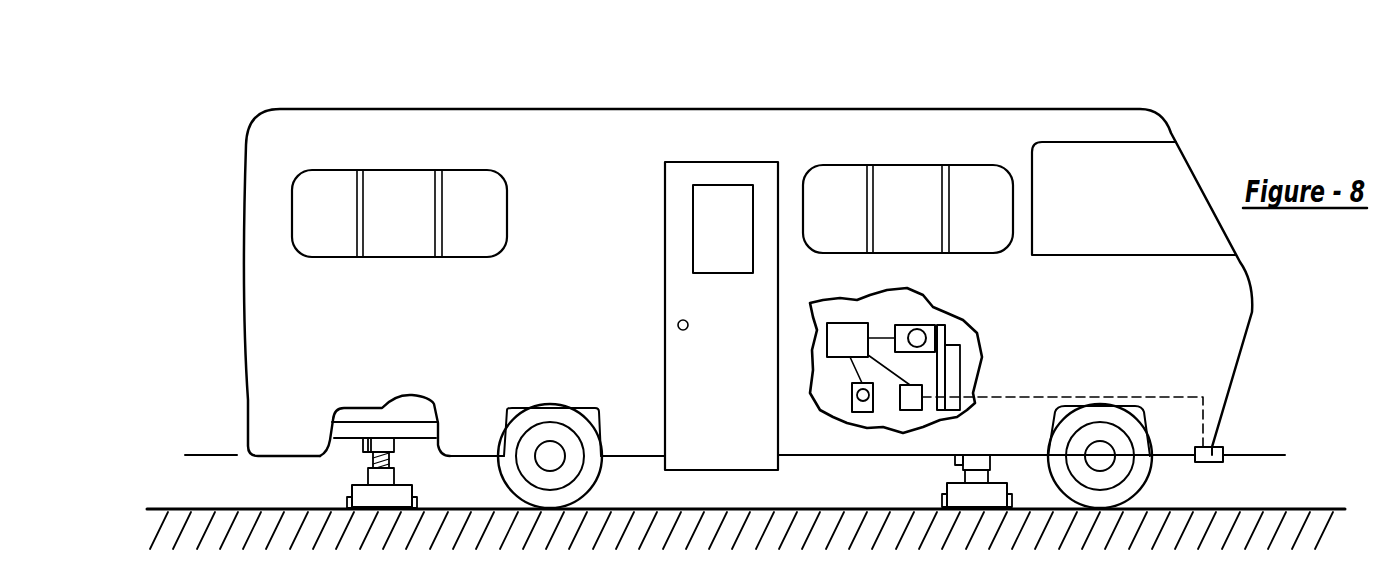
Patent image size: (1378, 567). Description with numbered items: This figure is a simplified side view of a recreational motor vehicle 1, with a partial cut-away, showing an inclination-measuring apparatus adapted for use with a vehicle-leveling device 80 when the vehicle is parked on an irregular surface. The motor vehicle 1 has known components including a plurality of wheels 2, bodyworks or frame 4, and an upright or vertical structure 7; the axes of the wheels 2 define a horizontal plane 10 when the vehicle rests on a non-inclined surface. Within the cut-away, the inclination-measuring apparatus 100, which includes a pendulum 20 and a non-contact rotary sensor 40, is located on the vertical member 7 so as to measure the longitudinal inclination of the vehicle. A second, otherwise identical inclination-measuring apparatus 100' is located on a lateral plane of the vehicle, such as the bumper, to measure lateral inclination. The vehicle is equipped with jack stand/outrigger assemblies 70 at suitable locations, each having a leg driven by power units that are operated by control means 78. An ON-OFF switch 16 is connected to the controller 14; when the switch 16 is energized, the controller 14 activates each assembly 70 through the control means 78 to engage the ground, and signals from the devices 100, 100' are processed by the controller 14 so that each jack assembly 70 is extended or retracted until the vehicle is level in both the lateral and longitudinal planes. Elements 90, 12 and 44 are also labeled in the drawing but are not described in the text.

The motor vehicle 1 is at (458, 99).
The vehicle roof 90 is at (901, 80).
The vehicle-leveling device 80 is at (1278, 291).
The wheels 2 is at (570, 497).
The bodyworks or frame 4 is at (385, 422).
The jack stand/outrigger assembly 70 is at (335, 473).
The direction of gravity 12 is at (796, 462).
The inclination-measuring apparatus 100 is at (937, 344).
The controller 14 is at (837, 332).
The pendulum 20 is at (881, 317).
The non-contact rotary sensor 40 is at (925, 333).
The upright or vertical structure 7 is at (958, 378).
The ON-OFF switch 16 is at (853, 404).
The control means 78 is at (868, 350).
The second inclination-measuring apparatus 100' is at (1253, 401).
The horizontal plane 10 is at (1257, 453).
The ground surface 44 is at (1167, 509).